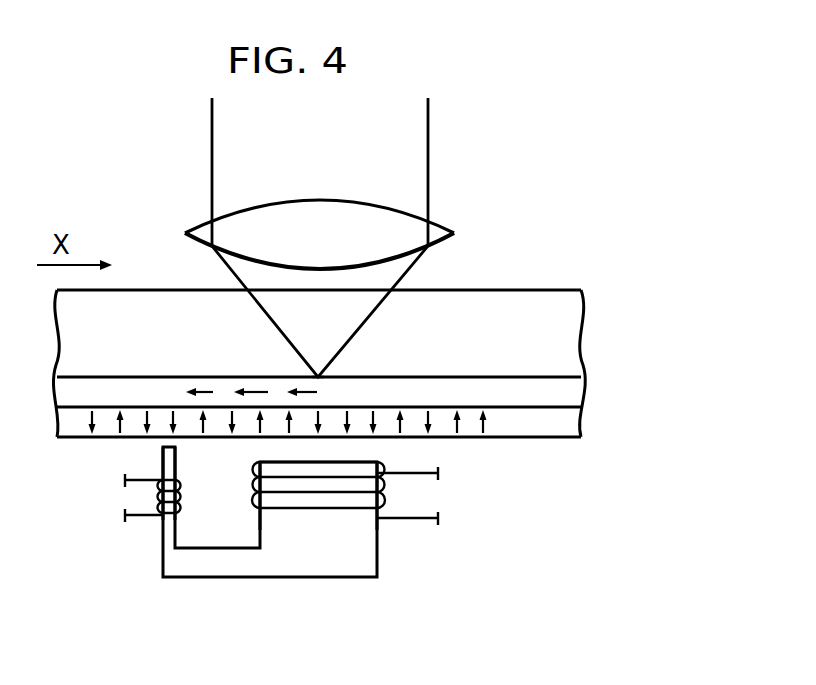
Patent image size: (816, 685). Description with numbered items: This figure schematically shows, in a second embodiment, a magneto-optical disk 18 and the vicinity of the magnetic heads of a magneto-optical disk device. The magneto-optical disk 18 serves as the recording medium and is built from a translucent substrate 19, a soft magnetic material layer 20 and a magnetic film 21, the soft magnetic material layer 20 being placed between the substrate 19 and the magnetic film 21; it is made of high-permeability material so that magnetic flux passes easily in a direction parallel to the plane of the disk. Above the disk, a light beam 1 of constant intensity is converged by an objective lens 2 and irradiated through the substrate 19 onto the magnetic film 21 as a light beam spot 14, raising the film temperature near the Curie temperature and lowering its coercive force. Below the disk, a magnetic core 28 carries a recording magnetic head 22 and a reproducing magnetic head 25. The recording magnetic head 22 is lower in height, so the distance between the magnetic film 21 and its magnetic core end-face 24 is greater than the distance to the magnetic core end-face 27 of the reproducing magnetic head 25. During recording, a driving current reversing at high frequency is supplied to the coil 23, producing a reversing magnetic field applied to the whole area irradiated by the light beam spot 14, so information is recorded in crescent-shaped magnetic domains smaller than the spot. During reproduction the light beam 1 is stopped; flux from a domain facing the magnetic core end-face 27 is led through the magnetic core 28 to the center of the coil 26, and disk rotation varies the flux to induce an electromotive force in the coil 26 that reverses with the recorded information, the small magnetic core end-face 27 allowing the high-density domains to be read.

The light beam 1 is at (410, 127).
The objective lens 2 is at (437, 230).
The light beam spot 14 is at (318, 377).
The magneto-optical disk 18 is at (596, 280).
The translucent substrate 19 is at (572, 328).
The soft magnetic material layer 20 is at (572, 394).
The magnetic film 21 is at (572, 427).
The recording magnetic head 22 is at (370, 457).
The coil 23 is at (413, 518).
The magnetic core end-face 24 is at (274, 455).
The reproducing magnetic head 25 is at (163, 458).
The coil 26 is at (143, 515).
The magnetic core end-face 27 is at (170, 443).
The magnetic core 28 is at (231, 578).